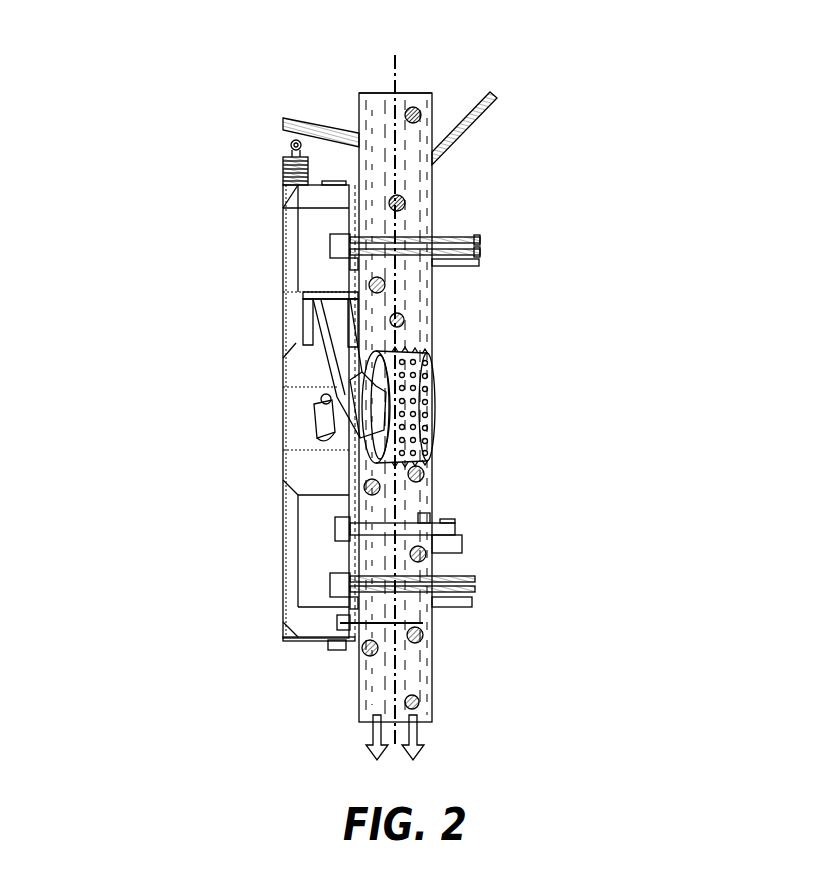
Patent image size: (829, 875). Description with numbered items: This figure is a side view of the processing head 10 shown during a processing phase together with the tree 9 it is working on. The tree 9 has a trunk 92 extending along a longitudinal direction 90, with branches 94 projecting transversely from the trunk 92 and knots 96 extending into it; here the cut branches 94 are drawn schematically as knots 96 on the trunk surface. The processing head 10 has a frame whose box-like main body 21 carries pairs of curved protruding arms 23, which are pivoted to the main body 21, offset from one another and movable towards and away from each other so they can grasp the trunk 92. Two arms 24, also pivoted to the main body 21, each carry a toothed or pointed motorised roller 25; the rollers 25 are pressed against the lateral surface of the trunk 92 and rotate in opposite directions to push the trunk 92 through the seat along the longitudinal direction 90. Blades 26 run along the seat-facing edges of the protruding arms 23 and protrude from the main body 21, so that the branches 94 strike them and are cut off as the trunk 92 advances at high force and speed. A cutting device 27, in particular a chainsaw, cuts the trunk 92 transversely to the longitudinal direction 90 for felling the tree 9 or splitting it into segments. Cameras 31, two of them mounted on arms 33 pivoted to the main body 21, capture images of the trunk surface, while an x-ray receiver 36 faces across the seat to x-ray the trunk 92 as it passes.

The tree 9 is at (440, 492).
The processing head 10 is at (268, 308).
The main body 21 is at (285, 518).
The protruding arms 23 is at (472, 252).
The arms 24 is at (345, 370).
The roller 25 is at (420, 408).
The blades 26 is at (348, 183).
The cutting device 27 is at (372, 623).
The cameras 31 is at (430, 515).
The arms 33 is at (452, 530).
The x-ray receiver 36 is at (445, 543).
The longitudinal direction 90 is at (397, 83).
The trunk 92 is at (432, 288).
The branches 94 is at (406, 114).
The knots 96 is at (380, 287).